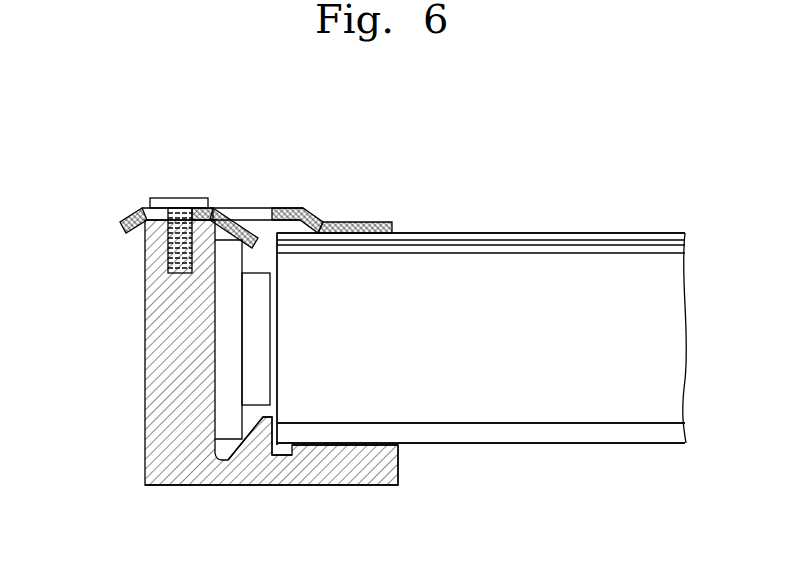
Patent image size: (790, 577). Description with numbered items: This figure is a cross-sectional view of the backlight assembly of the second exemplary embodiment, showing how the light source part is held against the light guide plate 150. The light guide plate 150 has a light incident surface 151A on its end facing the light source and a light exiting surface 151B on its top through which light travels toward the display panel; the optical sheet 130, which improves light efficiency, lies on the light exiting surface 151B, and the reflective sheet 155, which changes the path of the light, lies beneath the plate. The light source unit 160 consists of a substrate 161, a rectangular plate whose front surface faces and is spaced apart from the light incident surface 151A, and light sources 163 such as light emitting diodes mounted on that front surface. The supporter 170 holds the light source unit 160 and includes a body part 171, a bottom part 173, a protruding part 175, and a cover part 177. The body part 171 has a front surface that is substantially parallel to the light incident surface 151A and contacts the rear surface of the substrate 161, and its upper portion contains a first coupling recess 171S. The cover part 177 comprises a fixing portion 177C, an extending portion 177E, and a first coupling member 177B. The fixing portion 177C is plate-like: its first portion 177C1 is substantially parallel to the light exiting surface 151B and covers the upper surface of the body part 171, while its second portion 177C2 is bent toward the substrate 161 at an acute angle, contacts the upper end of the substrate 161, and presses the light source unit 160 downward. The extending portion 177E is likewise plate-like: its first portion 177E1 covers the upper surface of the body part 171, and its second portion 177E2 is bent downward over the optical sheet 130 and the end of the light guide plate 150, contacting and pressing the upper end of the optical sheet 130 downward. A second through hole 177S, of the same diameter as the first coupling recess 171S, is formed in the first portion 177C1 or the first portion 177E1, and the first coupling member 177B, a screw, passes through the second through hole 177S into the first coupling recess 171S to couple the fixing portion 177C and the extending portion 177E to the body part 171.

The optical sheet 130 is at (695, 235).
The light guide plate 150 is at (515, 339).
The light incident surface 151A is at (280, 337).
The light exiting surface 151B is at (444, 257).
The reflective sheet 155 is at (675, 433).
The light source unit 160 is at (149, 339).
The substrate 161 is at (223, 338).
The light sources 163 is at (250, 298).
The supporter 170 is at (230, 387).
The body part 171 is at (155, 377).
The first coupling recess 171S is at (167, 257).
The bottom part 173 is at (337, 465).
The protruding part 175 is at (275, 434).
The cover part 177 is at (289, 168).
The second through hole 177S is at (137, 207).
The first coupling member 177B is at (178, 198).
The fixing portion 177C is at (275, 168).
The first portion of fixing portion 177C1 is at (207, 207).
The second portion of fixing portion 177C2 is at (243, 207).
The extending portion 177E is at (392, 160).
The first portion of extending portion 177E1 is at (304, 208).
The second portion of extending portion 177E2 is at (378, 221).